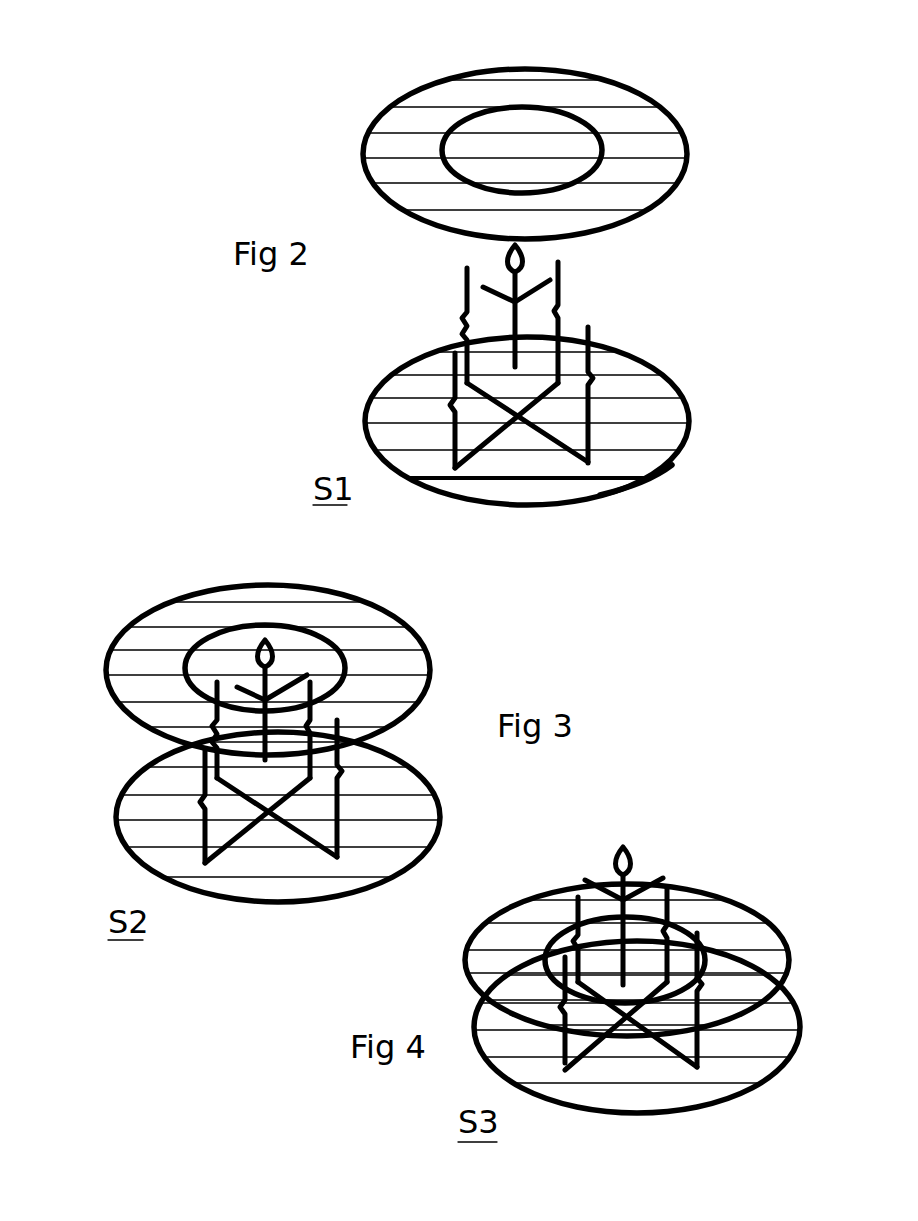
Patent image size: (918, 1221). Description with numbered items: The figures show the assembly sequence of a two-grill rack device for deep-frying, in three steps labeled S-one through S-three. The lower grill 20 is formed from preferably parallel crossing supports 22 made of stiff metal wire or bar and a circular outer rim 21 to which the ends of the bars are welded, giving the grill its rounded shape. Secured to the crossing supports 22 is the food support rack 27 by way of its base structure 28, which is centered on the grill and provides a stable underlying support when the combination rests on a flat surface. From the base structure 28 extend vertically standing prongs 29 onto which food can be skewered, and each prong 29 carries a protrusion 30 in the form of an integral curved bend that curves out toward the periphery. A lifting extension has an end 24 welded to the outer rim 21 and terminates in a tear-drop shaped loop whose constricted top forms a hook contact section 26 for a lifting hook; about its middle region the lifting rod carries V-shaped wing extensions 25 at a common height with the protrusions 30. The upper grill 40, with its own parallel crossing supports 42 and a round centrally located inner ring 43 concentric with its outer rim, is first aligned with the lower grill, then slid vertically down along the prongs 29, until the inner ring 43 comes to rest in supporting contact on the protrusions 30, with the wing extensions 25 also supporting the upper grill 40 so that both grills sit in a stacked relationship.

In FIG. 2, the lower grill 20 is at (453, 503).
In FIG. 3, the lower grill 20 is at (352, 895).
In FIG. 4, the lower grill 20 is at (800, 1027).
In FIG. 2, the outer rim 21 is at (647, 480).
In FIG. 2, the crossing supports 22 is at (548, 480).
In FIG. 2, the end of lifting extension 24 is at (512, 367).
In FIG. 2, the wing extensions 25 is at (493, 288).
In FIG. 3, the wing extensions 25 is at (247, 690).
In FIG. 4, the wing extensions 25 is at (658, 880).
In FIG. 2, the hook contact section 26 is at (527, 258).
In FIG. 3, the hook contact section 26 is at (263, 640).
In FIG. 4, the hook contact section 26 is at (632, 853).
In FIG. 3, the food support rack 27 is at (250, 833).
In FIG. 2, the base structure 28 is at (497, 433).
In FIG. 3, the base structure 28 is at (302, 835).
In FIG. 2, the prongs 29 is at (467, 292).
In FIG. 3, the prongs 29 is at (343, 808).
In FIG. 4, the prongs 29 is at (560, 1057).
In FIG. 2, the protrusion 30 is at (593, 382).
In FIG. 3, the protrusion 30 is at (347, 777).
In FIG. 4, the protrusion 30 is at (560, 1015).
In FIG. 2, the upper grill 40 is at (665, 128).
In FIG. 3, the upper grill 40 is at (110, 647).
In FIG. 4, the upper grill 40 is at (733, 897).
In FIG. 2, the crossing supports 42 is at (625, 103).
In FIG. 2, the inner ring 43 is at (588, 122).